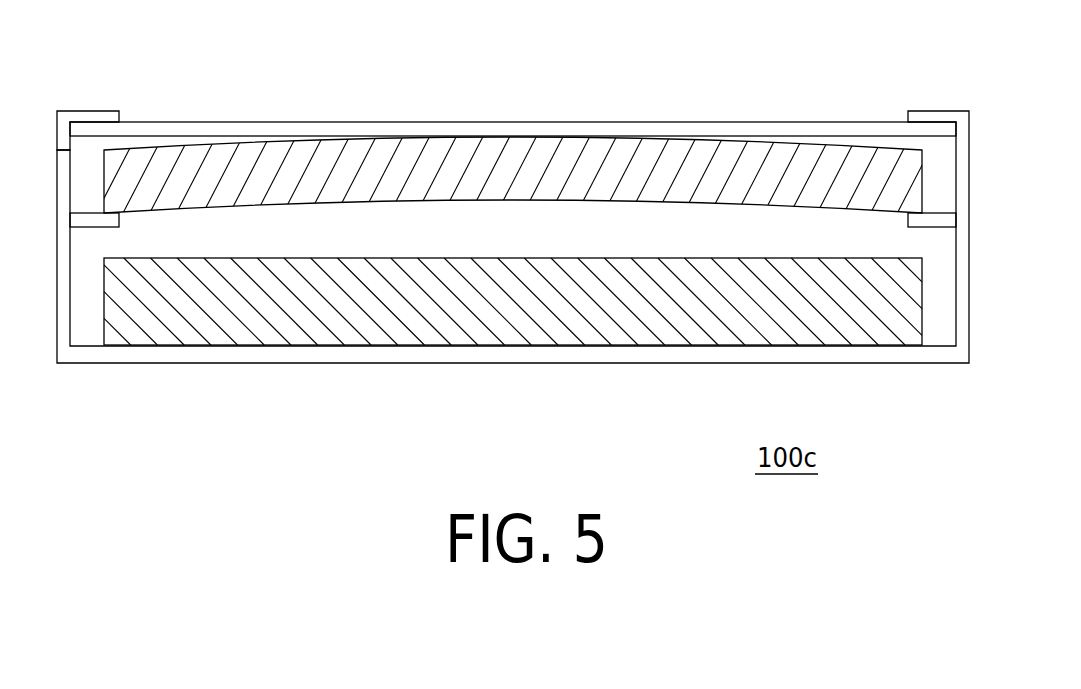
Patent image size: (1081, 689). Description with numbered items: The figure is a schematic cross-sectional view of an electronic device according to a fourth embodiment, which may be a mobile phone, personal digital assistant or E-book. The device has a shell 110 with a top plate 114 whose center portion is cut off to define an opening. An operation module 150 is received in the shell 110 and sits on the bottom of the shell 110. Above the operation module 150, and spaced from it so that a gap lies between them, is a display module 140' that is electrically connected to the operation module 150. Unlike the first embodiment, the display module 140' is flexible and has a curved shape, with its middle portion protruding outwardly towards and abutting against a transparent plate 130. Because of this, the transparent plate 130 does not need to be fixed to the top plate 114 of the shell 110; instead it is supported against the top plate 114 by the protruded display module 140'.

The shell 110 is at (962, 277).
The top plate 114 is at (93, 115).
The transparent plate 130 is at (257, 128).
The display module 140' is at (558, 175).
The operation module 150 is at (600, 330).